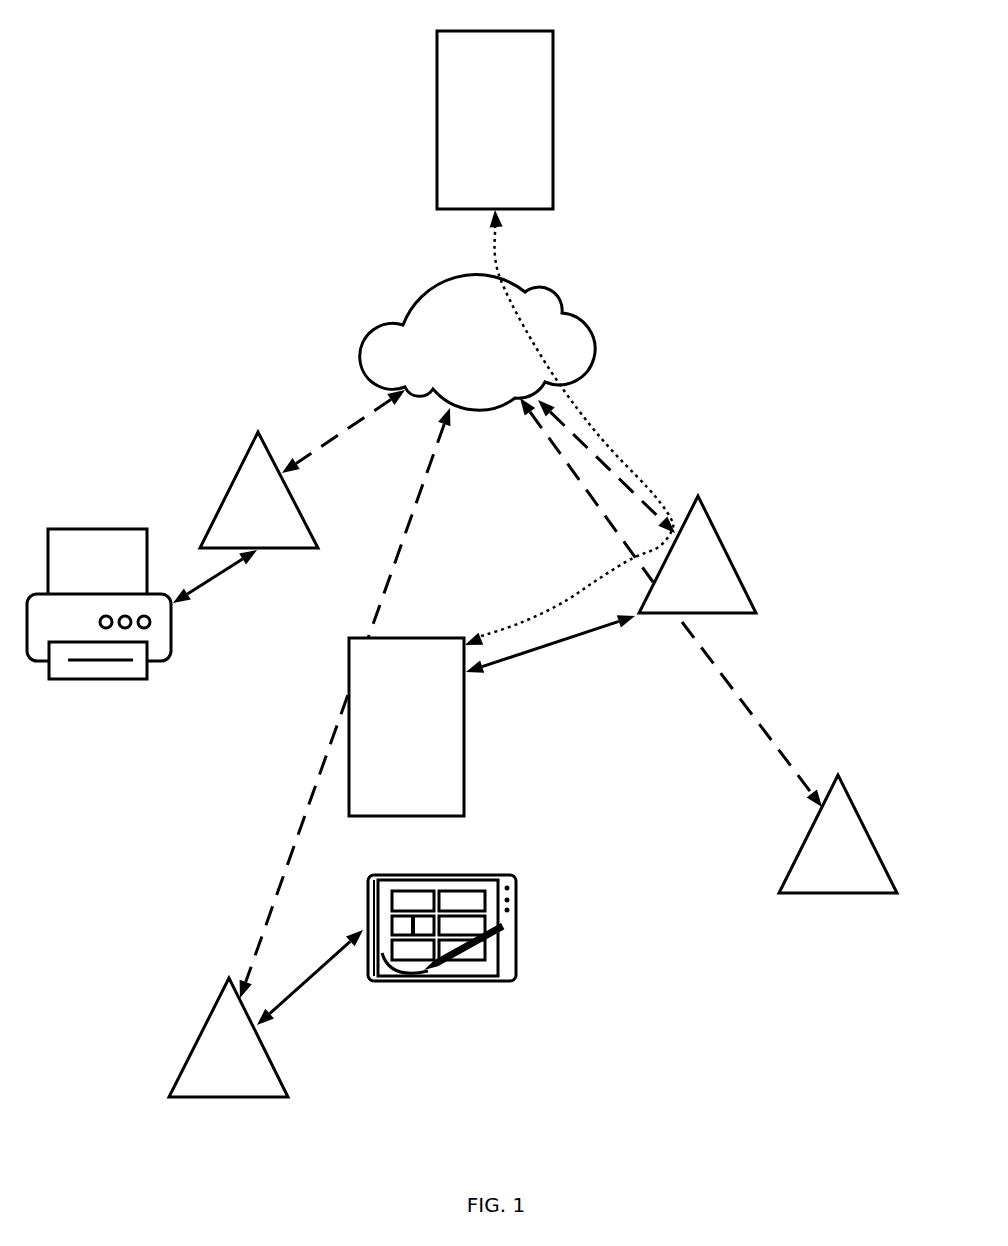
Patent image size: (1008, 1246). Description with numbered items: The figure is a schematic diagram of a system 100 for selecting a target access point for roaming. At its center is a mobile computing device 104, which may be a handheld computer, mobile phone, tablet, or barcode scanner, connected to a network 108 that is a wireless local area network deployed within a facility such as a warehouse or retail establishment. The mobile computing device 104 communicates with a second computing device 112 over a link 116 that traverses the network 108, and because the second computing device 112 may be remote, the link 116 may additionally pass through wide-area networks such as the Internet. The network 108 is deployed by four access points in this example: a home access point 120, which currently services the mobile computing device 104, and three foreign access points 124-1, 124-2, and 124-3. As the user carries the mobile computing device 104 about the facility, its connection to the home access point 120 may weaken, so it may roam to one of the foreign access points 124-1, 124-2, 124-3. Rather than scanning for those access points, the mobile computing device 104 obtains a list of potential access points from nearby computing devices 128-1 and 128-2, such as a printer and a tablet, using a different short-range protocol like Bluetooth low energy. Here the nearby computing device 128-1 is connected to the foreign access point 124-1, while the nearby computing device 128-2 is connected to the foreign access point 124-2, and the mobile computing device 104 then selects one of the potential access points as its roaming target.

The system 100 is at (339, 122).
The mobile computing device 104 is at (406, 727).
The network 108 is at (477, 343).
The second computing device 112 is at (495, 120).
The link 116 is at (570, 427).
The home access point 120 is at (697, 554).
The foreign access point 124-1 is at (259, 490).
The foreign access point 124-2 is at (228, 1037).
The foreign access point 124-3 is at (838, 834).
The nearby computing device 128-1 is at (98, 528).
The nearby computing device 128-2 is at (440, 982).